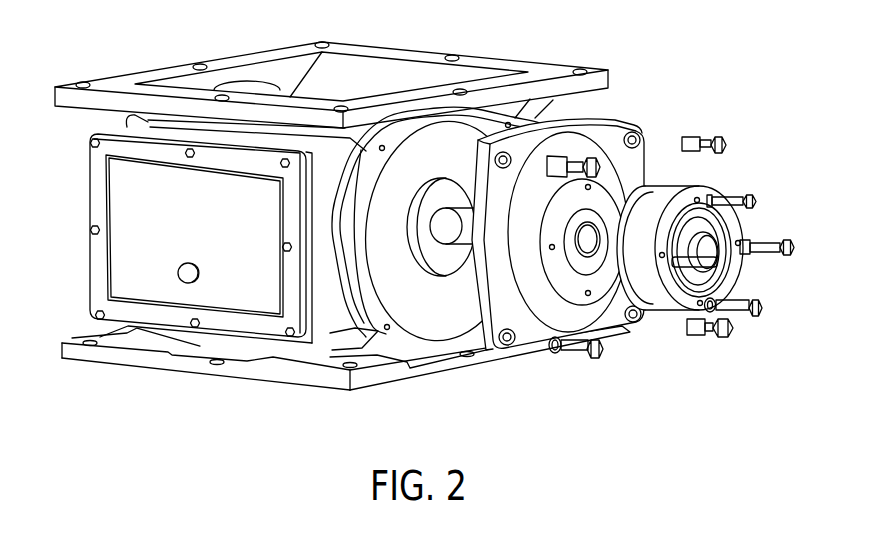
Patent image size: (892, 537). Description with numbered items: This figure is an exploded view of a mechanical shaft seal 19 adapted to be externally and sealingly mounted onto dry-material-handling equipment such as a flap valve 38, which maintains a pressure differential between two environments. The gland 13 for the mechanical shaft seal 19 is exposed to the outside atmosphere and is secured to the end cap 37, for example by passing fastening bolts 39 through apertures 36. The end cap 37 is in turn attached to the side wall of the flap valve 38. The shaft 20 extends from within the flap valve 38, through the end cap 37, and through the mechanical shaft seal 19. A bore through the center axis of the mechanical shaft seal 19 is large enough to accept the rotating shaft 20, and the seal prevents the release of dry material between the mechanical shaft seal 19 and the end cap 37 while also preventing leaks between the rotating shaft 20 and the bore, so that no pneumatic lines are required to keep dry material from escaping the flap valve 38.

The gland 13 is at (737, 234).
The mechanical shaft seal 19 is at (745, 273).
The shaft 20 is at (455, 245).
The apertures 36 is at (690, 190).
The end cap 37 is at (620, 120).
The flap valve 38 is at (553, 63).
The fastening bolts 39 is at (752, 198).